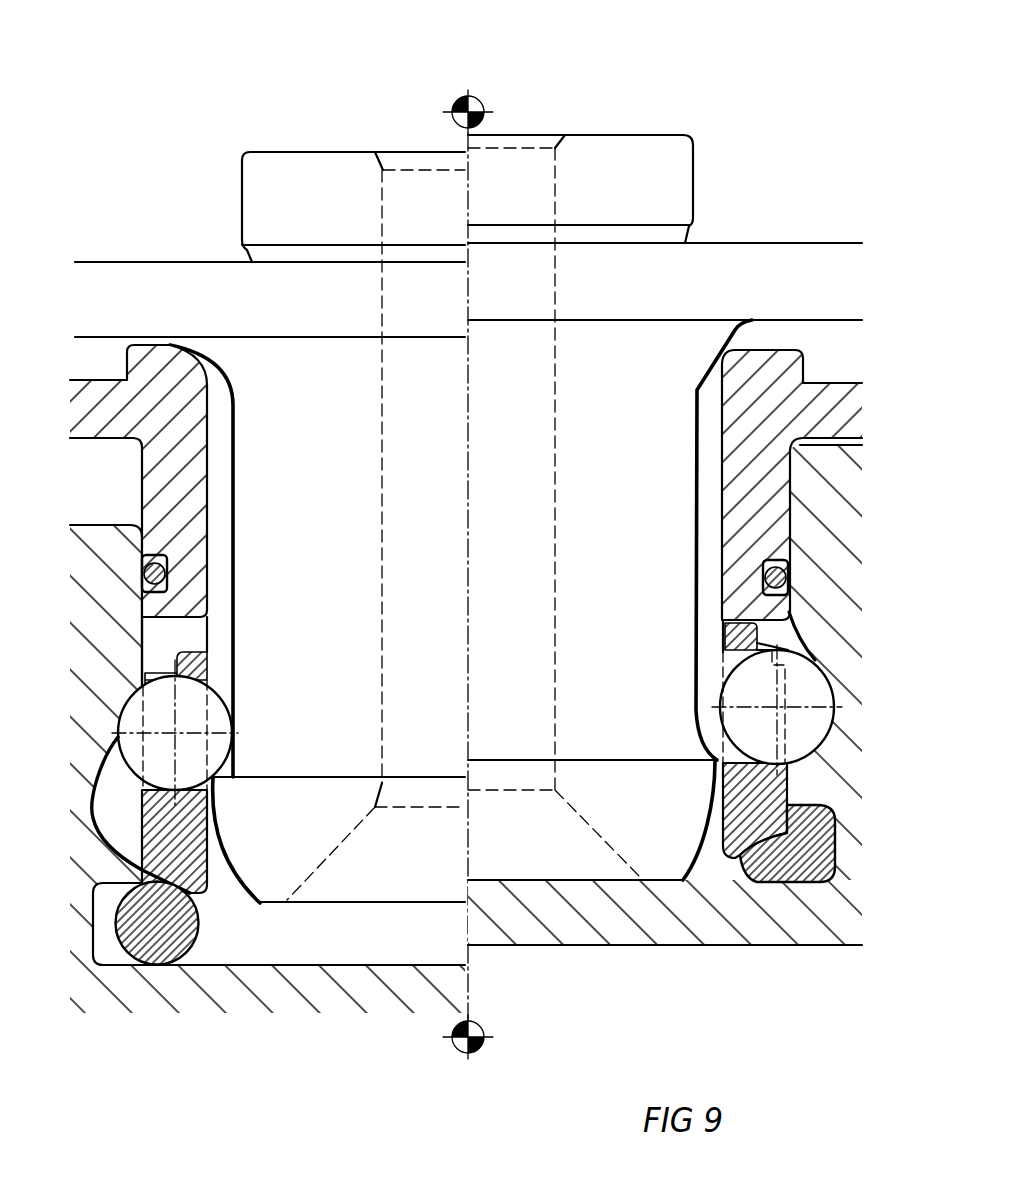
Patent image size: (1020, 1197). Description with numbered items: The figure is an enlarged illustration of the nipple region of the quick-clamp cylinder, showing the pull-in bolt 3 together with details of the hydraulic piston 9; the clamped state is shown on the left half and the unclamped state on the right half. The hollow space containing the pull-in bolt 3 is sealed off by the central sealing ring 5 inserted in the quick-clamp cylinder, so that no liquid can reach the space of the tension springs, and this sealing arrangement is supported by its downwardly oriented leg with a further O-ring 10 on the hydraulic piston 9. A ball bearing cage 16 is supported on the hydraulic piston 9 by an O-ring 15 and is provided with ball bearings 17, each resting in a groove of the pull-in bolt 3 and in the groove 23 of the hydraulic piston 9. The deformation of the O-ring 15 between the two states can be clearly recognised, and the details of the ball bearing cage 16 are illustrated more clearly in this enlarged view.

The pull-in bolt 3 is at (657, 170).
The sealing ring 5 is at (777, 378).
The hydraulic piston 9 is at (265, 985).
The O-ring 10 is at (167, 577).
The O-ring 15 is at (812, 840).
The ball bearing cage 16 is at (730, 860).
The ball bearings 17 is at (803, 695).
The groove 23 is at (793, 638).